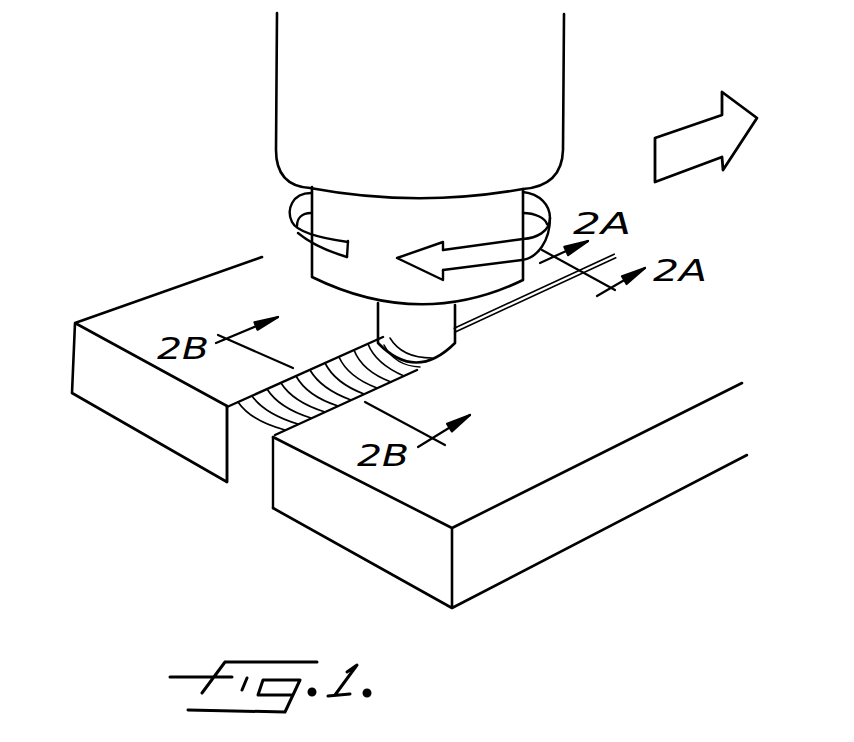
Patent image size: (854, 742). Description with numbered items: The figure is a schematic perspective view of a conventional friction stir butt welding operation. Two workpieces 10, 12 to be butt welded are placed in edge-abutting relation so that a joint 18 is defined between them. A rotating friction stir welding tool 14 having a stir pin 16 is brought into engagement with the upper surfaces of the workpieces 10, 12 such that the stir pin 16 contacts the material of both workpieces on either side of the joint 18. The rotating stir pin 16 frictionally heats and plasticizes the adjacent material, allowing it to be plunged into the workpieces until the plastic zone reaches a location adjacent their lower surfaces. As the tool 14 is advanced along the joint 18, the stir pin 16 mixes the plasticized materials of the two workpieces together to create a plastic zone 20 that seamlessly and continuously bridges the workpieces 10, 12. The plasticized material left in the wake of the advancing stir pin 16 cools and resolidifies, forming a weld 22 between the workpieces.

The workpiece 10 is at (141, 413).
The workpiece 12 is at (368, 553).
The friction stir welding tool 14 is at (293, 97).
The stir pin 16 is at (450, 333).
The joint 18 is at (525, 295).
The plastic zone 20 is at (370, 348).
The weld 22 is at (262, 414).